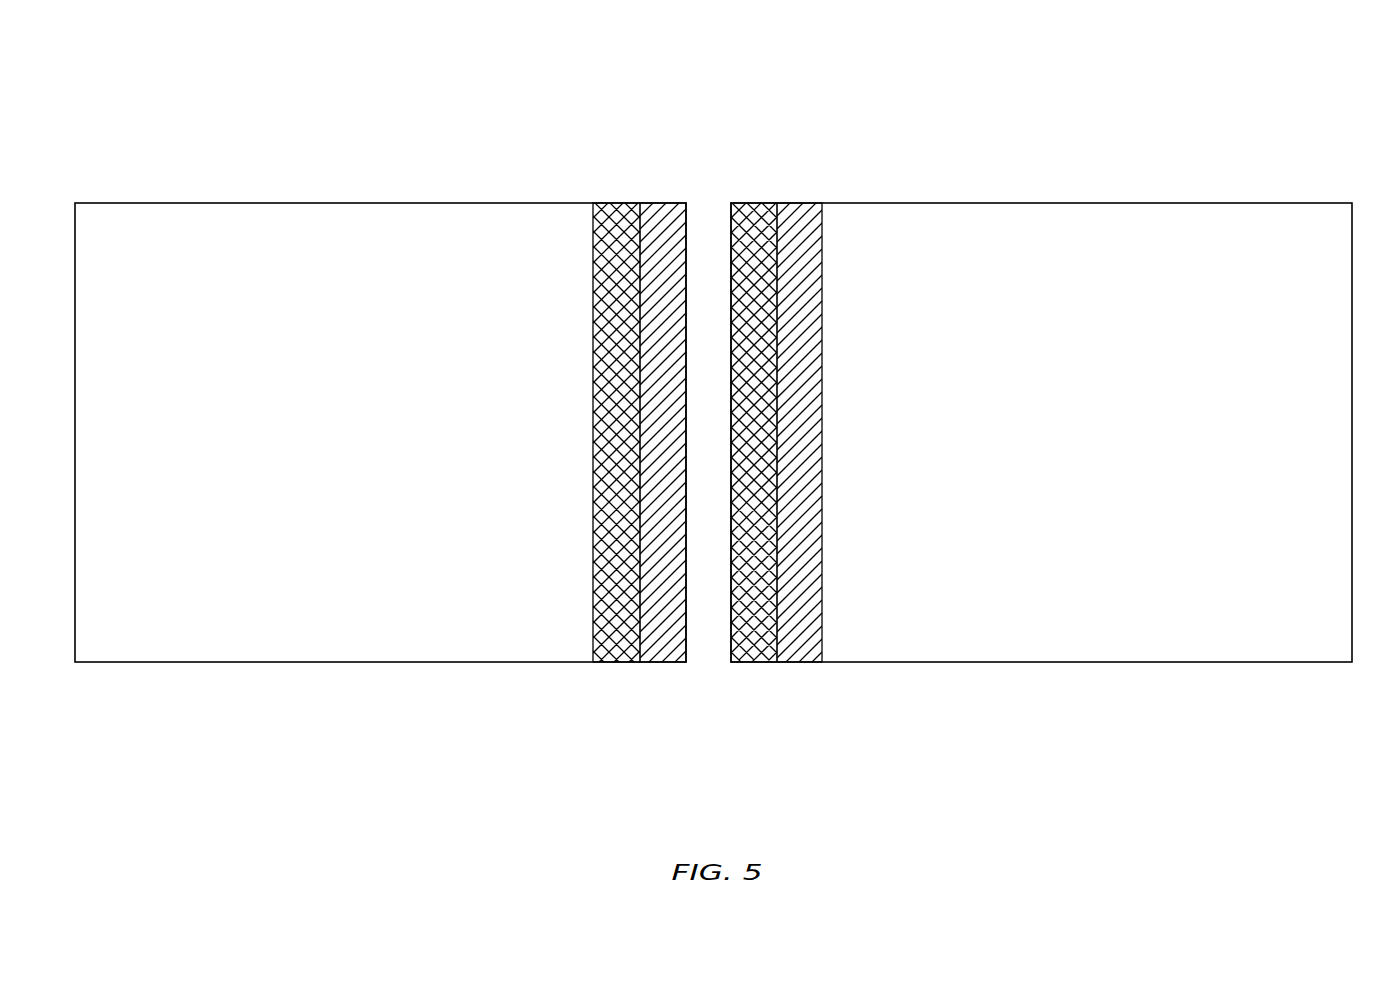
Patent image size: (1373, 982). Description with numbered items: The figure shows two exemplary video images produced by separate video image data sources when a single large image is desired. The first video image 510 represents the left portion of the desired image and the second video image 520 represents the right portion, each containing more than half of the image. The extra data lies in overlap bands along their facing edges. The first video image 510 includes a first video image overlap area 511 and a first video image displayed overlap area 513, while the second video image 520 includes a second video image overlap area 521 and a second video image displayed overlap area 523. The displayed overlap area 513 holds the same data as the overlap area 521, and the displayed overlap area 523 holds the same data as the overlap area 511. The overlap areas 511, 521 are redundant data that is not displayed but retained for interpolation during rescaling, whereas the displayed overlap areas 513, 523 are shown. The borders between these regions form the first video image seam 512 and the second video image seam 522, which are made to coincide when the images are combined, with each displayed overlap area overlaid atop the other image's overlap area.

The first video image 510 is at (380, 432).
The first video image overlap area 511 is at (663, 663).
The first video image seam 512 is at (640, 205).
The first video image displayed overlap area 513 is at (595, 395).
The second video image 520 is at (1041, 432).
The second video image overlap area 521 is at (753, 665).
The second video image seam 522 is at (778, 205).
The second video image displayed overlap area 523 is at (810, 480).